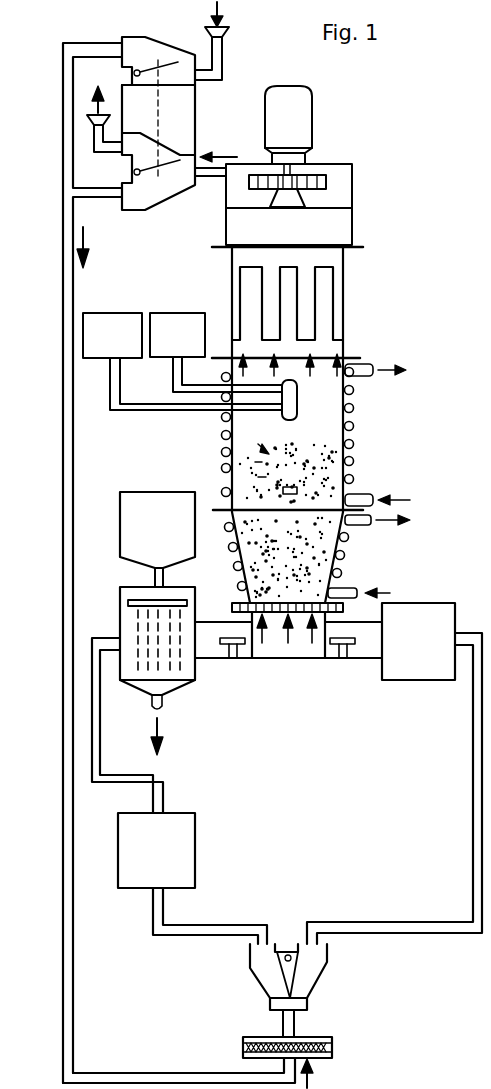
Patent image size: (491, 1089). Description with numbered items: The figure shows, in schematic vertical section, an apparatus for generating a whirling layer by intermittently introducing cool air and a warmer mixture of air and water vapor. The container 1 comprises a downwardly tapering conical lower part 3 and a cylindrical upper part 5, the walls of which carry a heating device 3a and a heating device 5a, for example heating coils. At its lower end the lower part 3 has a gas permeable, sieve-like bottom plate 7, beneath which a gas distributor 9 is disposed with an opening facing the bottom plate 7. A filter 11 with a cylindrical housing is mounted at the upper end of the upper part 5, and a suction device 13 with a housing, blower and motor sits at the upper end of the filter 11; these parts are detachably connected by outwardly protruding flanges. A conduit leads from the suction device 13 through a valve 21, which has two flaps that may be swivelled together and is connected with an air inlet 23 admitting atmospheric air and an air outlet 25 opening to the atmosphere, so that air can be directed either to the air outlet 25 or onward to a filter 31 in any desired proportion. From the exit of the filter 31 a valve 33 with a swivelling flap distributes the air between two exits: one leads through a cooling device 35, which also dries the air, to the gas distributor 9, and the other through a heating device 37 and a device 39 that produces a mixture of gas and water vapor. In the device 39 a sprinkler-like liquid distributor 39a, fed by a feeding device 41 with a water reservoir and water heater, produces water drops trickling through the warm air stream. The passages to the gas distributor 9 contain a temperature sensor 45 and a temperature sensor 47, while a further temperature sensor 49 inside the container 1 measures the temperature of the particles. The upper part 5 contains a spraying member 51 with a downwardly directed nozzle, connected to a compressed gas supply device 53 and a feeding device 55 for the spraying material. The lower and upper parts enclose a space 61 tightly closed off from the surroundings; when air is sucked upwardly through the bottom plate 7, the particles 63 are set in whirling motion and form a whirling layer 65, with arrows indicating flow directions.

The container 1 is at (372, 476).
The conical lower part 3 is at (342, 565).
The heating device 3a is at (347, 538).
The cylindrical upper part 5 is at (356, 418).
The heating device 5a is at (356, 388).
The bottom plate 7 is at (277, 612).
The gas distributor 9 is at (303, 658).
The filter 11 is at (343, 302).
The suction device 13 is at (352, 196).
The valve 21 is at (167, 199).
The air inlet 23 is at (229, 33).
The air outlet 25 is at (95, 116).
The filter 31 is at (332, 1048).
The valve 33 is at (328, 968).
The cooling device 35 is at (418, 682).
The heating device 37 is at (137, 888).
The device for producing a mixture of gas and water vapor 39 is at (120, 587).
The liquid distributor 39a is at (128, 603).
The feeding device 41 is at (120, 527).
The temperature sensor 45 is at (351, 646).
The temperature sensor 47 is at (221, 660).
The temperature sensor 49 is at (290, 487).
The spraying member 51 is at (297, 396).
The compressed gas supply device 53 is at (120, 313).
The feeding device 55 is at (165, 313).
The space 61 is at (255, 420).
The particles 63 is at (258, 477).
The whirling layer 65 is at (258, 444).